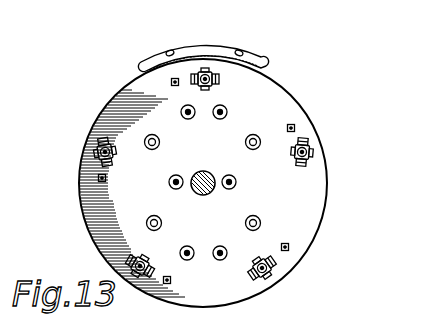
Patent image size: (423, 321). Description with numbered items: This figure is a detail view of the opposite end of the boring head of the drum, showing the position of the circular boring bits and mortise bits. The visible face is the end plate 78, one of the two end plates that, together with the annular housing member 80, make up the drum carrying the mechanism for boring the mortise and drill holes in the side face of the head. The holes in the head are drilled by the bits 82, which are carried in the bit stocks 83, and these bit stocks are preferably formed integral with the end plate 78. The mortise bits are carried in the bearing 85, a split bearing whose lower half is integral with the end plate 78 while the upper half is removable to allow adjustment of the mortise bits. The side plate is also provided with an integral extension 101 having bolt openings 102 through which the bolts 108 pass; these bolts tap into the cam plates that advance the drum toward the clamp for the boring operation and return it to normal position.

The end plate 78 is at (264, 110).
The annular housing member 80 is at (316, 151).
The bits 82 is at (177, 189).
The bit stocks 83 is at (187, 260).
The bearing 85 is at (111, 165).
The integral extension 101 is at (258, 58).
The bolt openings 102 is at (228, 46).
The bolts 108 is at (172, 48).